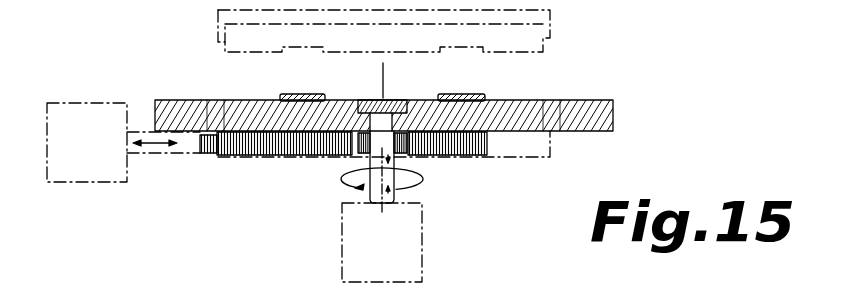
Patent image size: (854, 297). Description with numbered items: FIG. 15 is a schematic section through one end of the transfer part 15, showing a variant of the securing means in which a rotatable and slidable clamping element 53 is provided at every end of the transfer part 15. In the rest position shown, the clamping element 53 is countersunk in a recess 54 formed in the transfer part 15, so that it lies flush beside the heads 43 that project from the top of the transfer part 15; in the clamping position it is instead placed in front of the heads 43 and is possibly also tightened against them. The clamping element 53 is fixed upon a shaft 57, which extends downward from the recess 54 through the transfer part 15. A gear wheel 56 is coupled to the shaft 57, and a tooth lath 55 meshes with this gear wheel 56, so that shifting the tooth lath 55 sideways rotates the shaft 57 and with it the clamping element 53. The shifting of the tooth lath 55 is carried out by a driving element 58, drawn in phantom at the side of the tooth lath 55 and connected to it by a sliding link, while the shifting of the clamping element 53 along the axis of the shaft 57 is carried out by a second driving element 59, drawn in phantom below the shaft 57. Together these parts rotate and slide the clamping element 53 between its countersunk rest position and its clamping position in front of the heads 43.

The transfer part 15 is at (602, 101).
The heads 43 is at (297, 96).
The clamping element 53 is at (373, 98).
The recess 54 is at (403, 112).
The tooth lath 55 is at (485, 146).
The gear wheel 56 is at (357, 141).
The shaft 57 is at (378, 124).
The driving element 58 is at (88, 183).
The driving element 59 is at (410, 255).